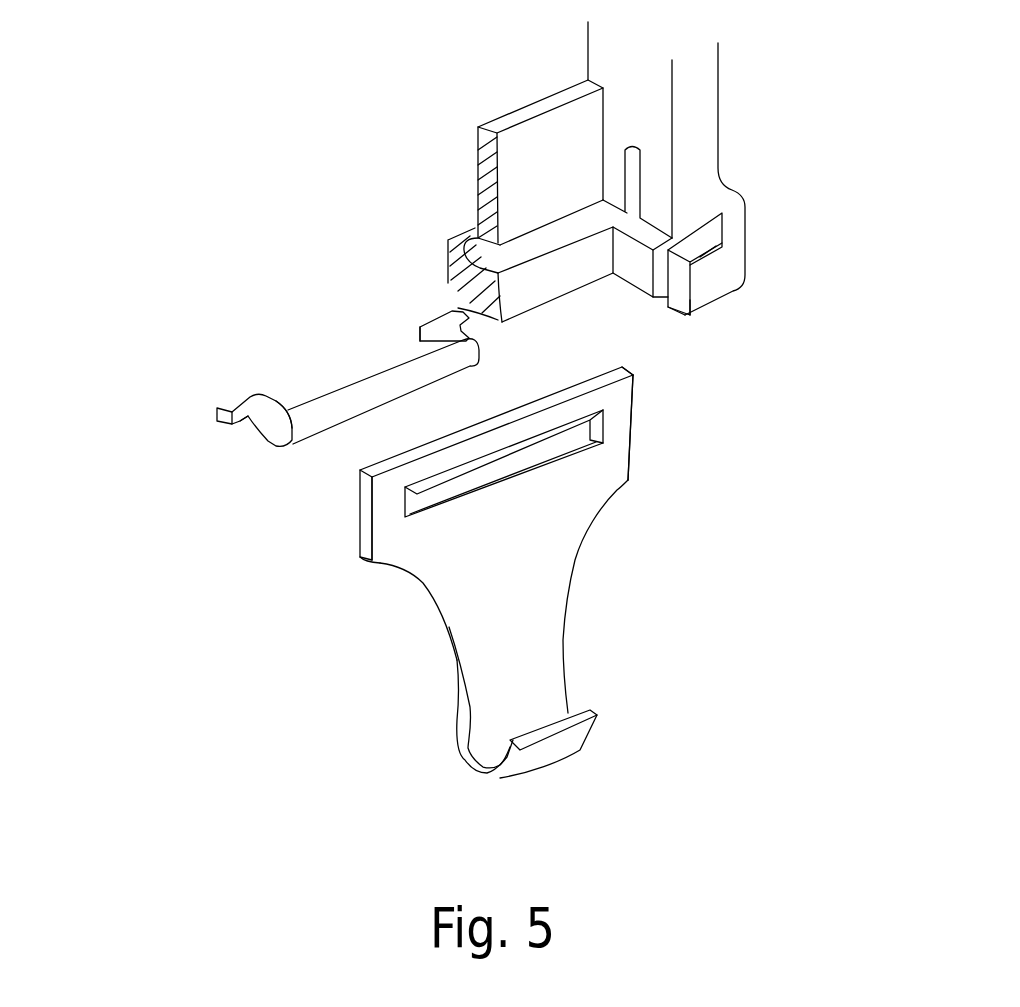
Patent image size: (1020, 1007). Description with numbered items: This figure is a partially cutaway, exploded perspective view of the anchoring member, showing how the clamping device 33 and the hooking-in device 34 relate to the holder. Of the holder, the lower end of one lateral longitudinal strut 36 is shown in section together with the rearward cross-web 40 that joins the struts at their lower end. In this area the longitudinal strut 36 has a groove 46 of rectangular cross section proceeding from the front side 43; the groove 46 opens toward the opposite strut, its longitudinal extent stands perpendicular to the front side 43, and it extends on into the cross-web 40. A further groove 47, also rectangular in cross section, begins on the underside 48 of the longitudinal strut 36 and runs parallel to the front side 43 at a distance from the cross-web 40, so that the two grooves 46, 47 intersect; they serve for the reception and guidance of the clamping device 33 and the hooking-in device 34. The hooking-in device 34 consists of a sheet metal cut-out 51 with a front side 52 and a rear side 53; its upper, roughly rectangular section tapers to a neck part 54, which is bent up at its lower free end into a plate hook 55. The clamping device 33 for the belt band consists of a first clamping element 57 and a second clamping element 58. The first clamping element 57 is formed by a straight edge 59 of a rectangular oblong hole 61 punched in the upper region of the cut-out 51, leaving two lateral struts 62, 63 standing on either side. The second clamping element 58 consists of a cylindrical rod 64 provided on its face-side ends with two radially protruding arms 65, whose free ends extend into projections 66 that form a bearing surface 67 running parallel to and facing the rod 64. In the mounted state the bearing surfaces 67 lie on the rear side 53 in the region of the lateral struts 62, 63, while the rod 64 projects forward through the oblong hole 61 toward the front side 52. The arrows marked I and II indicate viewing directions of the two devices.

The clamping device 33 is at (287, 525).
The hooking-in device 34 is at (668, 720).
The longitudinal strut 36 is at (707, 105).
The cross-web 40 is at (475, 183).
The front side 43 is at (717, 192).
The groove 46 is at (710, 230).
The further groove 47 is at (658, 297).
The underside 48 is at (715, 302).
The sheet metal cut-out 51 is at (363, 563).
The front side 52 is at (517, 575).
The rear side 53 is at (450, 663).
The neck part 54 is at (530, 628).
The plate hook 55 is at (583, 710).
The first clamping element 57 is at (652, 448).
The second clamping element 58 is at (292, 340).
The straight edge 59 is at (550, 422).
The rectangular oblong hole 61 is at (603, 416).
The lateral strut 62 is at (383, 512).
The lateral strut 63 is at (617, 440).
The cylindrical rod 64 is at (305, 425).
The arm 65 is at (417, 340).
The projection 66 is at (440, 305).
The bearing surface 67 is at (247, 427).
The viewing direction I is at (800, 477).
The viewing direction II is at (167, 337).